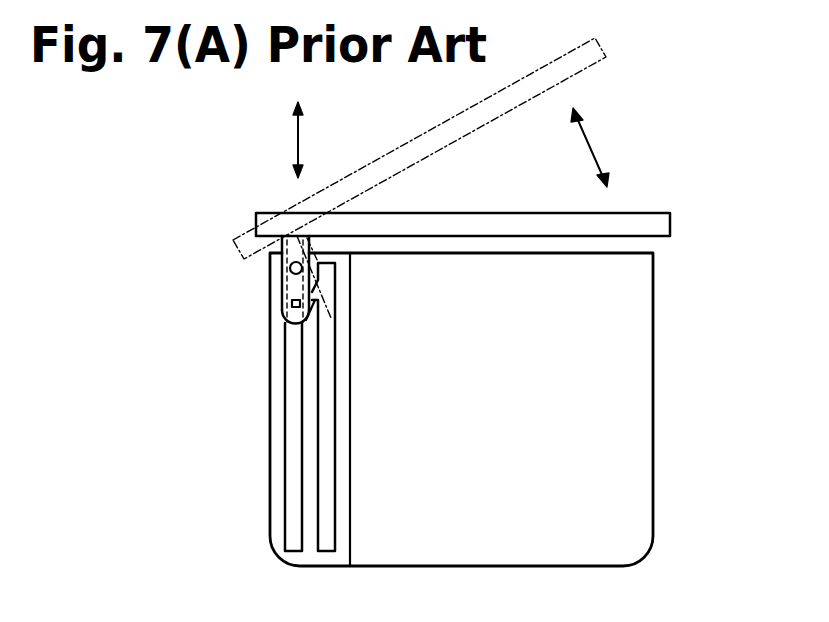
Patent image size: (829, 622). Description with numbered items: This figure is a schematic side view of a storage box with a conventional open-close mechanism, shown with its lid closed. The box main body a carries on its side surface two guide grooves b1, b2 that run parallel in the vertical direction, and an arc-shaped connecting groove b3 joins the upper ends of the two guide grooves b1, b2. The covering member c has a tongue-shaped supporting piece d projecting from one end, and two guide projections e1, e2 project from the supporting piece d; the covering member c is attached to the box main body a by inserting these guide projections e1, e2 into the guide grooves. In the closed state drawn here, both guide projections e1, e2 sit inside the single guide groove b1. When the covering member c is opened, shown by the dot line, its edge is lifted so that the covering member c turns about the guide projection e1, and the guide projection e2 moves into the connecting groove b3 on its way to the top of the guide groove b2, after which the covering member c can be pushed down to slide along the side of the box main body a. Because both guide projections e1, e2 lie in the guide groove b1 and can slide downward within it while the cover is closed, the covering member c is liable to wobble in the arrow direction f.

The box main body a is at (627, 385).
The guide groove b1 is at (292, 475).
The guide groove b2 is at (325, 485).
The connecting groove b3 is at (305, 322).
The covering member c is at (613, 228).
The supporting piece d is at (283, 240).
The guide projection e1 is at (290, 272).
The guide projection e2 is at (288, 302).
The arrow direction f is at (298, 140).